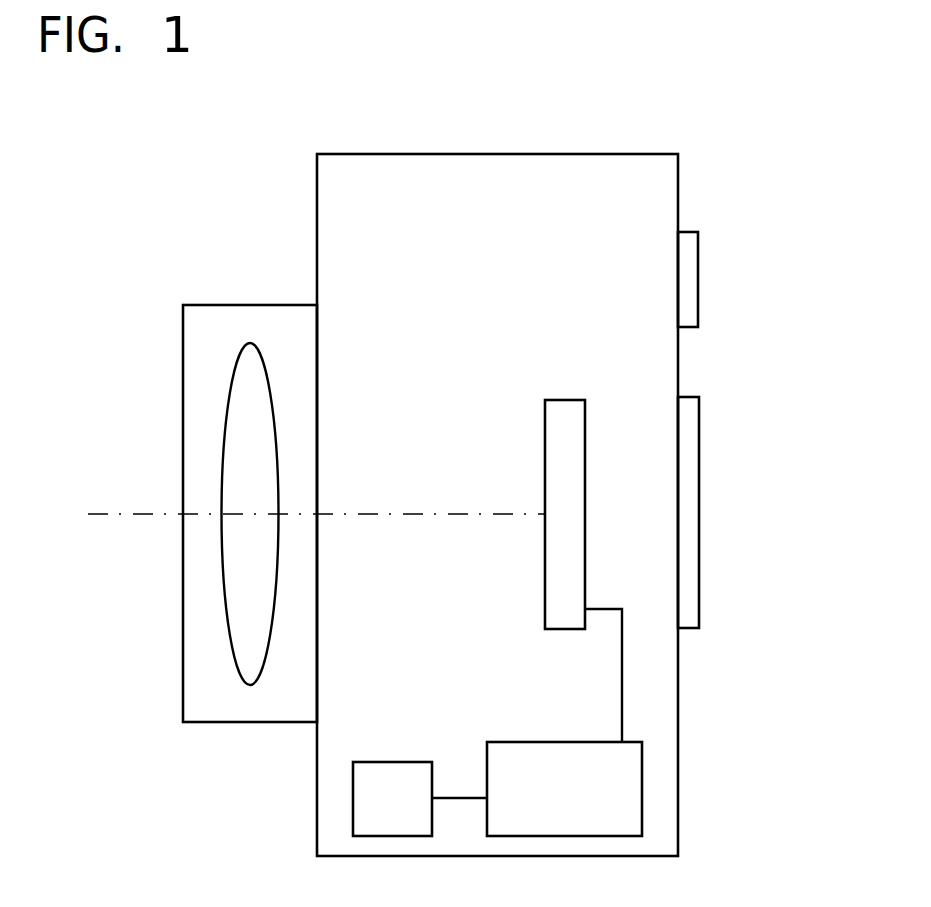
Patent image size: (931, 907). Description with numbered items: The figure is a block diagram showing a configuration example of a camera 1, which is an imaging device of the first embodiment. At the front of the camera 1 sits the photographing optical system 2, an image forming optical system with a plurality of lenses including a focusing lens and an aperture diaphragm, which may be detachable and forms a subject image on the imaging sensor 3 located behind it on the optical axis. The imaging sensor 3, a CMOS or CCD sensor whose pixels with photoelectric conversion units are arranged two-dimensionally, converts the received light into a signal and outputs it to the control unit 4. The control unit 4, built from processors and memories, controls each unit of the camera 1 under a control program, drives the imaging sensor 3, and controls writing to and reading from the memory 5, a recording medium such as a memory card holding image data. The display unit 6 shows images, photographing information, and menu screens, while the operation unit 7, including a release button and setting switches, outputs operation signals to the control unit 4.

The camera 1 is at (205, 190).
The photographing optical system 2 is at (227, 422).
The imaging sensor 3 is at (545, 442).
The control unit 4 is at (545, 742).
The memory 5 is at (412, 760).
The display unit 6 is at (700, 493).
The operation unit 7 is at (699, 280).